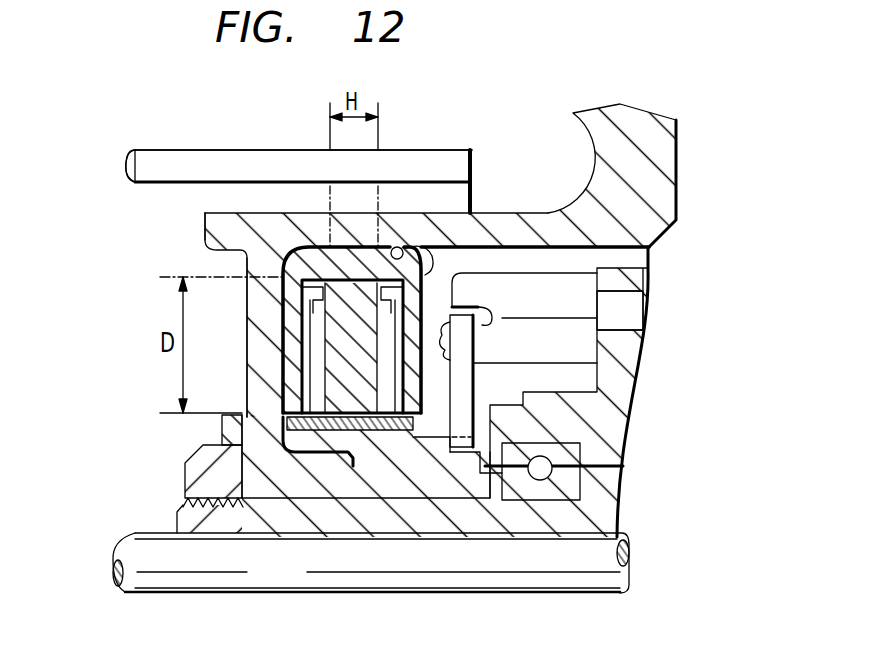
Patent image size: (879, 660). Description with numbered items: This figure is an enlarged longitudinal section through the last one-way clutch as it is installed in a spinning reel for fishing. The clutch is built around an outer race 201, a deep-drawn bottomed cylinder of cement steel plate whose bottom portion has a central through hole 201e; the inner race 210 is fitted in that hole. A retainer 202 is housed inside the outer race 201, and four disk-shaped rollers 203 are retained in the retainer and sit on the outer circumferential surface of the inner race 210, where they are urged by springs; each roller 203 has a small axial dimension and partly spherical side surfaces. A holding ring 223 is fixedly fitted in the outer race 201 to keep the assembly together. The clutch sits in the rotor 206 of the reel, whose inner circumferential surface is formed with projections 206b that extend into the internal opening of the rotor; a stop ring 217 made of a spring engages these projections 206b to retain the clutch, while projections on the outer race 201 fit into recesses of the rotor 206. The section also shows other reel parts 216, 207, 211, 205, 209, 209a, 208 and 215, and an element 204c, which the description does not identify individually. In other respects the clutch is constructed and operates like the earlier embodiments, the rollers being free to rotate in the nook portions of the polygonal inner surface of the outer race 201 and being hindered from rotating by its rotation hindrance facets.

The support arm 216 is at (154, 160).
The outer race 201 is at (298, 257).
The rotor 206 is at (678, 173).
The holding ring 223 is at (283, 283).
The bearing cap 204c is at (440, 275).
The stop ring 217 is at (398, 247).
The projections 206b is at (436, 258).
The retainer 202 is at (312, 388).
The disk-shaped rollers 203 is at (357, 403).
The through hole 201e is at (413, 415).
The inner race 210 is at (290, 421).
The nut 207 is at (285, 451).
The sleeve 211 is at (607, 512).
The cover 205 is at (652, 277).
The cavity 209 is at (528, 273).
The bracket 209a is at (500, 312).
The plate 208 is at (474, 377).
The shaft 215 is at (629, 553).